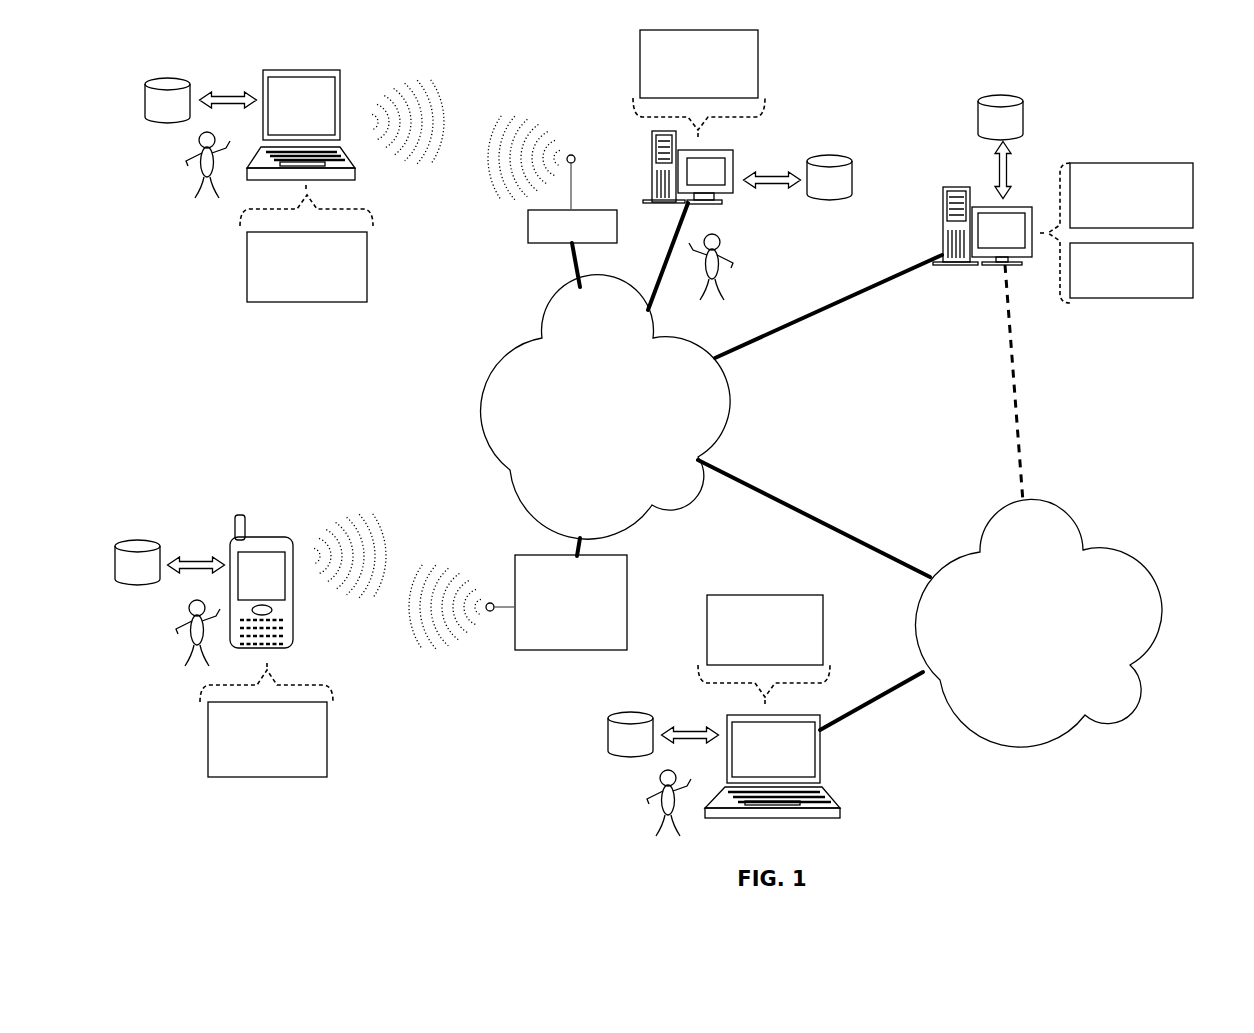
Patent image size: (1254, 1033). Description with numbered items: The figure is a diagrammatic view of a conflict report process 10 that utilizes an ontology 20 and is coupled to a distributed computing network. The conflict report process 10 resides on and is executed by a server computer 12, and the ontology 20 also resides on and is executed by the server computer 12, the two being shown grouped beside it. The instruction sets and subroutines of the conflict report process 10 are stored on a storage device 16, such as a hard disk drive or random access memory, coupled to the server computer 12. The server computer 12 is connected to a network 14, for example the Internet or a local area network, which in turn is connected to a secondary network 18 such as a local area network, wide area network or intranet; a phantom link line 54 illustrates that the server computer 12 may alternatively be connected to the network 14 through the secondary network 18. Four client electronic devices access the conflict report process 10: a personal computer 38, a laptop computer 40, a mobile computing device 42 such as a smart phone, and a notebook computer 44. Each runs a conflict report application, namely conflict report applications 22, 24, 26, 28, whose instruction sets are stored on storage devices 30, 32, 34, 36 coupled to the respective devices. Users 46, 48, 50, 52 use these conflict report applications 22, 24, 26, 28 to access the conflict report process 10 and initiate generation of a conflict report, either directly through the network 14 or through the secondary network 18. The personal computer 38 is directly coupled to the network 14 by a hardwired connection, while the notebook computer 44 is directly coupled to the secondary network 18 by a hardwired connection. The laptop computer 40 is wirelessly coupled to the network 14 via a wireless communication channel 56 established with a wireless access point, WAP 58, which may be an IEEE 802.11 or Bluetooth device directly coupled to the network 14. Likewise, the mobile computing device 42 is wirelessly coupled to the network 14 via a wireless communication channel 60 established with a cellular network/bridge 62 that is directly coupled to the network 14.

The conflict report process 10 is at (1193, 165).
The server computer 12 is at (942, 210).
The network 14 is at (605, 407).
The storage device 16 is at (1000, 147).
The secondary network 18 is at (1038, 623).
The ontology 20 is at (1193, 297).
The conflict report application 22 is at (758, 72).
The conflict report application 24 is at (367, 250).
The conflict report application 26 is at (327, 727).
The conflict report application 28 is at (823, 642).
The storage device 30 is at (798, 177).
The storage device 32 is at (201, 100).
The storage device 34 is at (170, 562).
The storage device 36 is at (663, 734).
The personal computer 38 is at (733, 165).
The laptop computer 40 is at (338, 92).
The mobile computing device 42 is at (297, 590).
The notebook computer 44 is at (820, 760).
The user 46 is at (727, 250).
The user 48 is at (180, 157).
The user 50 is at (172, 617).
The user 52 is at (635, 795).
The phantom link line 54 is at (1010, 373).
The wireless communication channel 56 is at (478, 108).
The wireless access point (WAP) 58 is at (525, 227).
The wireless communication channel 60 is at (408, 555).
The cellular network/bridge 62 is at (627, 572).